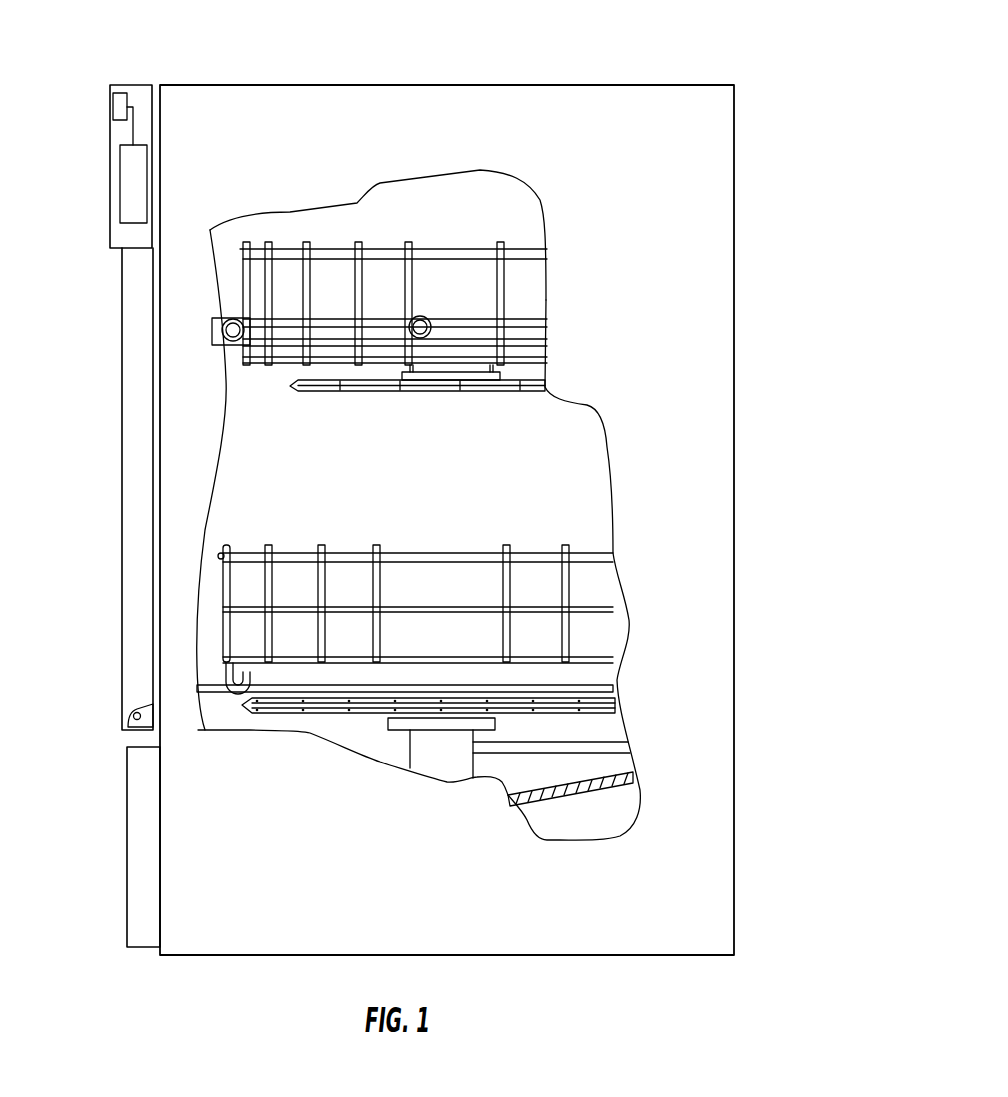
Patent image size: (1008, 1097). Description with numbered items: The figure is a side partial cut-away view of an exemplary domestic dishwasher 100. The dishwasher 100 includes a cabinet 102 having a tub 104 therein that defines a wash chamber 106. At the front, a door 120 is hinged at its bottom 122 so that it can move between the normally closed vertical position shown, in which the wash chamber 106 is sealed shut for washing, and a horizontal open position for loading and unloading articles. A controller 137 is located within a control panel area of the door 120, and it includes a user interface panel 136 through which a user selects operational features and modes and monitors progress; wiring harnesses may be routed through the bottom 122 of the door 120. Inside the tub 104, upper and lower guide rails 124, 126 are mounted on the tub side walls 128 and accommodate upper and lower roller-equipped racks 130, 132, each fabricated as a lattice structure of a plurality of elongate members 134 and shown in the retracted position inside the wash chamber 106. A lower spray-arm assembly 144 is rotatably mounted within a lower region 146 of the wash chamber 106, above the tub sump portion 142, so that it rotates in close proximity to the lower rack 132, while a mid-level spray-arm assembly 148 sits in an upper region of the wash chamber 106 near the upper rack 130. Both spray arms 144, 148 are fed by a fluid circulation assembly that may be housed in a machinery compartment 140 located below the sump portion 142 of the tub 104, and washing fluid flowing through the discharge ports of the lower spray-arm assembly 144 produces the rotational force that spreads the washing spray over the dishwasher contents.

The dishwasher 100 is at (625, 63).
The cabinet 102 is at (686, 192).
The tub 104 is at (262, 485).
The wash chamber 106 is at (241, 513).
The door 120 is at (120, 695).
The bottom 122 is at (121, 733).
The upper guide rail 124 is at (231, 348).
The lower guide rail 126 is at (211, 690).
The tub side walls 128 is at (295, 220).
The upper rack 130 is at (369, 242).
The lower rack 132 is at (397, 552).
The elongate members 134 is at (268, 367).
The user interface panel 136 is at (113, 108).
The controller 137 is at (137, 191).
The machinery compartment 140 is at (596, 826).
The tub sump portion 142 is at (603, 790).
The lower spray-arm assembly 144 is at (313, 714).
The lower region 146 is at (590, 670).
The mid-level spray-arm assembly 148 is at (389, 405).